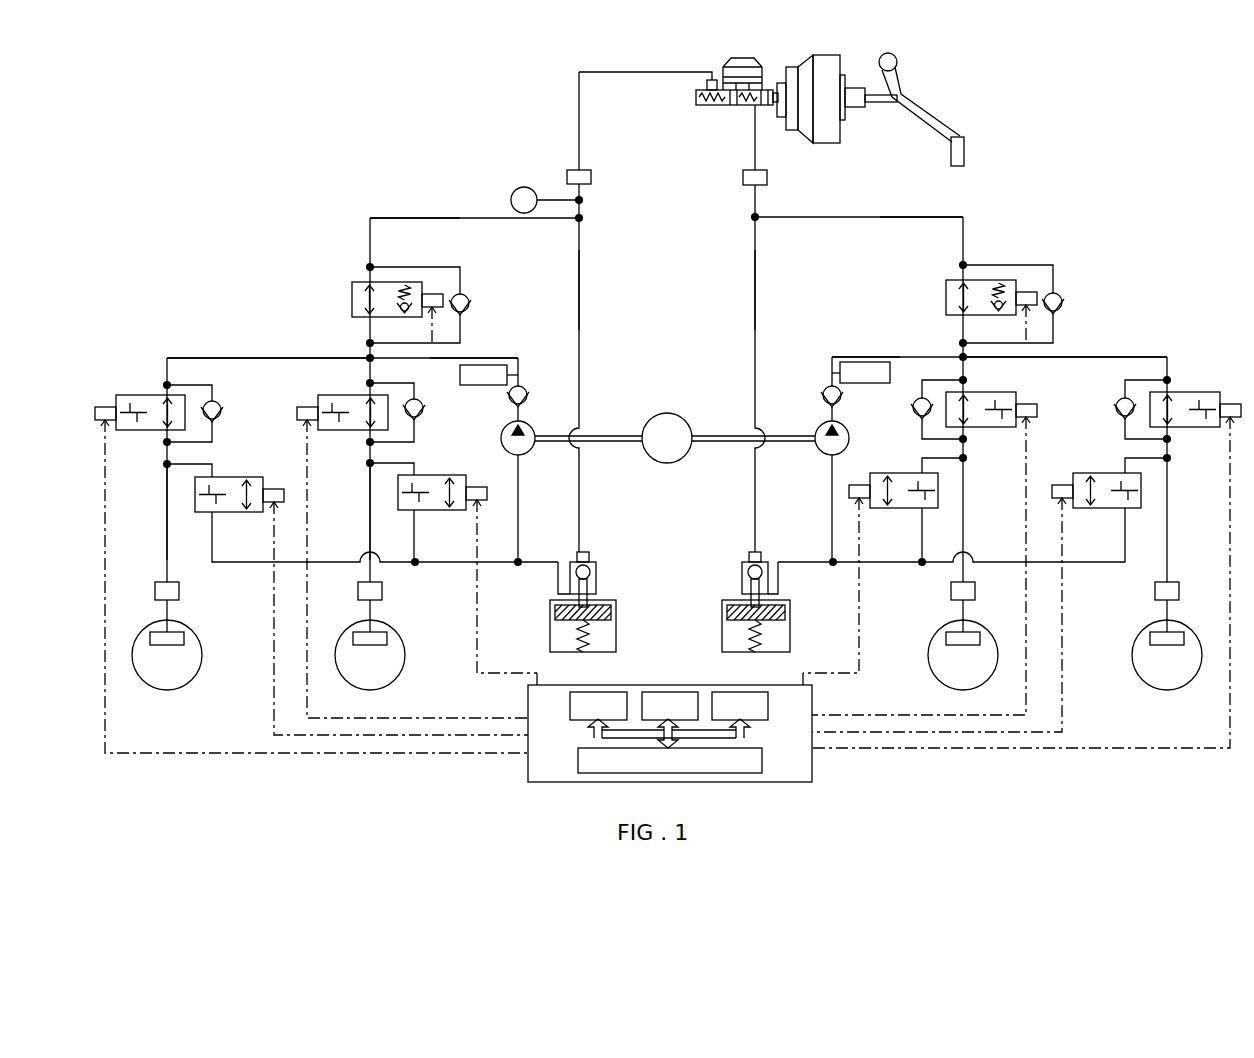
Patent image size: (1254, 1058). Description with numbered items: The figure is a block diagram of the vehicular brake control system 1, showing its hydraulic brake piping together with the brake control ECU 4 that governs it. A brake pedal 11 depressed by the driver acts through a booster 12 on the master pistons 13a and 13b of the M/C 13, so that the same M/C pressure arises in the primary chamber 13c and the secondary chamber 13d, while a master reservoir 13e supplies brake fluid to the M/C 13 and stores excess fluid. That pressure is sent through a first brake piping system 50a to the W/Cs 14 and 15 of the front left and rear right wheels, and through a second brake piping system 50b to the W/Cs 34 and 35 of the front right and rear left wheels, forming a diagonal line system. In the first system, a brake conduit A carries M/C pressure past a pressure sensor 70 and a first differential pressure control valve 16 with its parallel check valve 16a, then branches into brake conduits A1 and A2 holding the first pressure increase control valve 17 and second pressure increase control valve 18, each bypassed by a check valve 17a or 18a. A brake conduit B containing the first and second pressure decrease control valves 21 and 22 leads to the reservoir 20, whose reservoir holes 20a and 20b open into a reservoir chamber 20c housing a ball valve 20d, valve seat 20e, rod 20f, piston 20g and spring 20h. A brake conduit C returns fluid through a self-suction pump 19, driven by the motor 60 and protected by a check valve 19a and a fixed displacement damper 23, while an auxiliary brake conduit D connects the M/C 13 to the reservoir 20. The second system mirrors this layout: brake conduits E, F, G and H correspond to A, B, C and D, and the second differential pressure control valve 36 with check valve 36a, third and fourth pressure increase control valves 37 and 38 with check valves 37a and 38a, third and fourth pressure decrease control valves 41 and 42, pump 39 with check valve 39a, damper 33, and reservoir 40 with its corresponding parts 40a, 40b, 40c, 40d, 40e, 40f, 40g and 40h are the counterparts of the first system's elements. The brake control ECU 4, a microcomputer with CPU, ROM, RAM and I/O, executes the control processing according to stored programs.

The vehicular brake control system 1 is at (1035, 56).
The brake control ECU 4 is at (812, 768).
The brake pedal 11 is at (905, 84).
The booster 12 is at (822, 55).
The M/C (master cylinder) 13 is at (716, 108).
The master piston 13a is at (734, 106).
The master piston 13b is at (771, 108).
The primary chamber 13c is at (711, 105).
The secondary chamber 13d is at (757, 106).
The master reservoir 13e is at (744, 59).
The W/C (wheel cylinder) 14 is at (152, 638).
The W/C (wheel cylinder) 15 is at (356, 638).
The first differential pressure control valve 16 is at (352, 298).
The check valve 16a is at (453, 290).
The first pressure increase control valve 17 is at (160, 394).
The check valve 17a is at (221, 407).
The second pressure increase control valve 18 is at (356, 396).
The check valve 18a is at (425, 409).
The self-suction pump 19 is at (501, 438).
The check valve 19a is at (523, 388).
The reservoir 20 is at (573, 593).
The reservoir hole 20a is at (583, 552).
The reservoir hole 20b is at (558, 580).
The reservoir chamber 20c is at (552, 600).
The ball valve 20d is at (591, 562).
The valve seat 20e is at (590, 573).
The rod 20f is at (588, 598).
The piston 20g is at (612, 615).
The spring 20h is at (606, 652).
The first pressure decrease control valve 21 is at (222, 477).
The second pressure decrease control valve 22 is at (430, 476).
The fixed displacement damper 23 is at (507, 365).
The reservoir 33 is at (845, 362).
The W/C (wheel cylinder) 34 is at (1185, 637).
The W/C (wheel cylinder) 35 is at (982, 637).
The second differential pressure control valve 36 is at (946, 298).
The check valve 36a is at (1049, 290).
The third pressure increase control valve 37 is at (1176, 392).
The check valve 37a is at (1115, 405).
The fourth pressure increase control valve 38 is at (978, 392).
The check valve 38a is at (912, 408).
The pump 39 is at (849, 438).
The check valve 39a is at (822, 393).
The reservoir 40 is at (760, 590).
The inlet port 40a is at (755, 552).
The passage 40b is at (778, 580).
The valve housing 40c is at (790, 600).
The valve seat member 40d is at (748, 562).
The valve ball 40e is at (747, 573).
The valve rod 40f is at (750, 598).
The piston 40g is at (727, 615).
The spring 40h is at (748, 652).
The third pressure decrease control valve 41 is at (1113, 473).
The fourth pressure decrease control valve 42 is at (905, 473).
The first brake piping system 50a is at (245, 213).
The second brake piping system 50b is at (1092, 213).
The motor 60 is at (657, 415).
The pressure sensor 70 is at (511, 200).
The brake conduit A is at (390, 219).
The brake conduit A1 is at (167, 527).
The brake conduit A2 is at (370, 508).
The brake conduit B is at (432, 565).
The brake conduit C is at (480, 358).
The brake conduit D is at (580, 292).
The brake conduit E is at (942, 219).
The brake conduit F is at (905, 565).
The brake conduit G is at (835, 357).
The brake conduit H is at (757, 292).